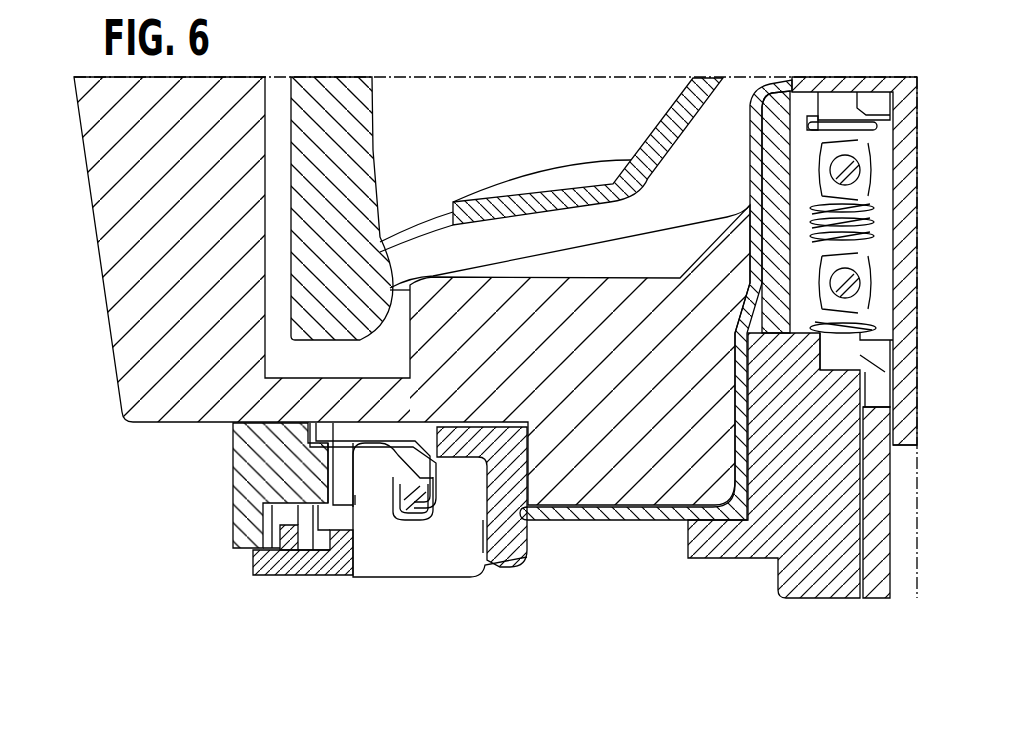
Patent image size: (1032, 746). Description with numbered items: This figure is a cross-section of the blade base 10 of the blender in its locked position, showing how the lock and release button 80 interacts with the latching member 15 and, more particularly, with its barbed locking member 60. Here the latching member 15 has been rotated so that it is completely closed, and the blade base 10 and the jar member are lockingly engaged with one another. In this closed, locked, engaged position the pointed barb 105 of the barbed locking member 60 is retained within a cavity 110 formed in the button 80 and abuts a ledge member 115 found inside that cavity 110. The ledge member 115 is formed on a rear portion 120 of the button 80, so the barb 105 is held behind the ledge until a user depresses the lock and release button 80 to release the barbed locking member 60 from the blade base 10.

The blade base 10 is at (97, 338).
The latching member 15 is at (367, 592).
The barbed locking member 60 is at (362, 490).
The lock and release button 80 is at (255, 461).
The pointed barb 105 is at (466, 503).
The cavity 110 is at (341, 452).
The ledge member 115 is at (422, 490).
The rear portion 120 is at (421, 436).